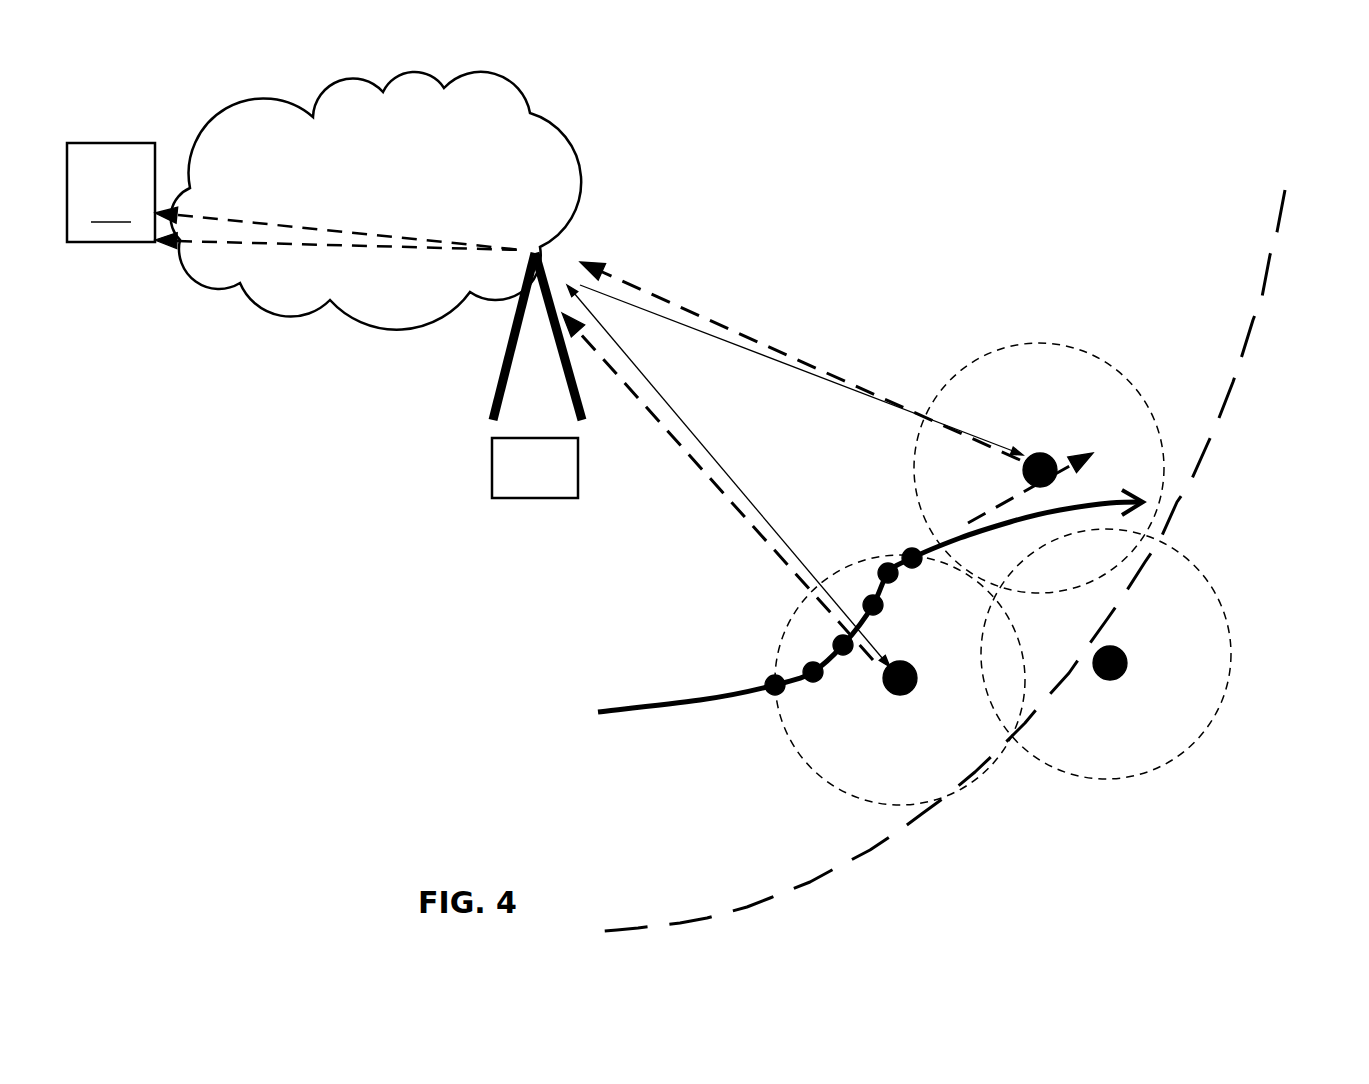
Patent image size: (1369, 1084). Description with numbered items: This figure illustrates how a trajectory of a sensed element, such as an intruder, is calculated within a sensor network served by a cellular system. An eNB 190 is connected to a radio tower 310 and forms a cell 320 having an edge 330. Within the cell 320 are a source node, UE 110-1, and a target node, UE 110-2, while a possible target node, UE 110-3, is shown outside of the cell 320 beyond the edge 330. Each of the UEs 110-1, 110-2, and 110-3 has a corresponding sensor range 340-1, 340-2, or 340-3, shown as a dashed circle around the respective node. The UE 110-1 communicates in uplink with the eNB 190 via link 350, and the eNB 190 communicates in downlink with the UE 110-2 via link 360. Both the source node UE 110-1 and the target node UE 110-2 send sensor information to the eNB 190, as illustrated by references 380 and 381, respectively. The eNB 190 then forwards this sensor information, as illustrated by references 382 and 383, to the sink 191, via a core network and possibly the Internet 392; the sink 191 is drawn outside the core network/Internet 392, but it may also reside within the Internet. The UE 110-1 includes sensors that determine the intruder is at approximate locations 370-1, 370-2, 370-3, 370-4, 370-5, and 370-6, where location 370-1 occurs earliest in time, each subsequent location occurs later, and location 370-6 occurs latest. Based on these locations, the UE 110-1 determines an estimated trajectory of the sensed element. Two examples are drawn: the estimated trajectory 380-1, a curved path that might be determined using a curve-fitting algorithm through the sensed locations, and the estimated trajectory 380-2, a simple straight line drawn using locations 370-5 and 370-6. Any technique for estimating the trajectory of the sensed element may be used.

The sink 191 is at (111, 192).
The core network/Internet 392 is at (340, 272).
The forwarding of target node sensor information 383 is at (258, 218).
The forwarding of source node sensor information 382 is at (208, 243).
The radio tower 310 is at (578, 226).
The eNB 190 is at (516, 479).
The cell 320 is at (1006, 229).
The sensor information transmission from target node 381 is at (693, 308).
The downlink link 360 is at (820, 372).
The sensor information transmission from source node / estimated trajectory 380 is at (683, 447).
The uplink link 350 is at (747, 497).
The cell edge 330 is at (1290, 200).
The sensor range 340-1 is at (805, 750).
The sensor range 340-2 is at (1106, 367).
The sensor range 340-3 is at (1160, 547).
The UE (source node) 110-1 is at (908, 690).
The UE (target node) 110-2 is at (1047, 455).
The UE (possible target node) 110-3 is at (1115, 648).
The estimated trajectory 380-1 is at (1093, 502).
The estimated trajectory 380-2 is at (1000, 507).
The location of sensed element 370-1 is at (768, 680).
The location of sensed element 370-2 is at (806, 665).
The location of sensed element 370-3 is at (835, 638).
The location of sensed element 370-4 is at (880, 610).
The location of sensed element 370-5 is at (880, 567).
The location of sensed element 370-6 is at (905, 550).